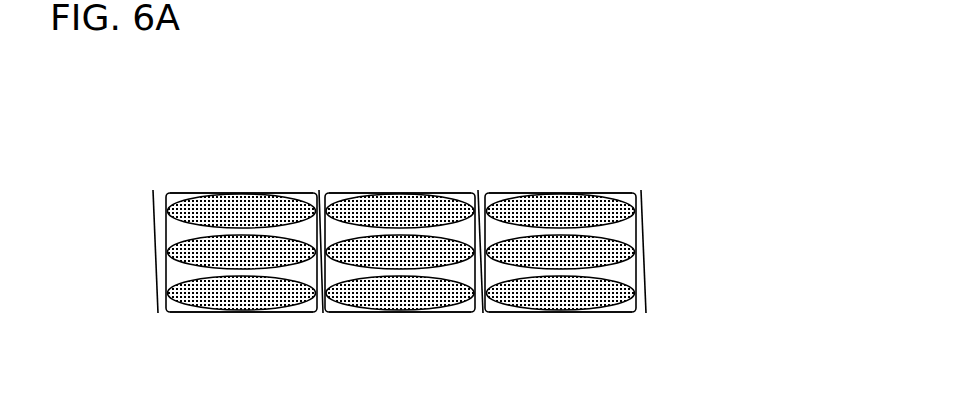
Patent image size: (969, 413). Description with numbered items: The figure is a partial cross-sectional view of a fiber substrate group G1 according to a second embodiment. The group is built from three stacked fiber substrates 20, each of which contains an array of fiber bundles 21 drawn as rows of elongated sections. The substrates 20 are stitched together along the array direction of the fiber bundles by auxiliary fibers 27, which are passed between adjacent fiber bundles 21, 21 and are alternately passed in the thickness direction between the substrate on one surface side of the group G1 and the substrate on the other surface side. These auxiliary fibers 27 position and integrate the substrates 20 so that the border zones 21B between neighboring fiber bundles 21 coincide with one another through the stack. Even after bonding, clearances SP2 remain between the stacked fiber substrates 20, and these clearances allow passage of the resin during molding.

The fiber substrate 20 is at (646, 200).
The fiber bundle 21 is at (217, 192).
The border zone 21B is at (480, 200).
The auxiliary fiber 27 is at (348, 192).
The clearance SP2 is at (180, 272).
The fiber substrate group G1 is at (787, 167).